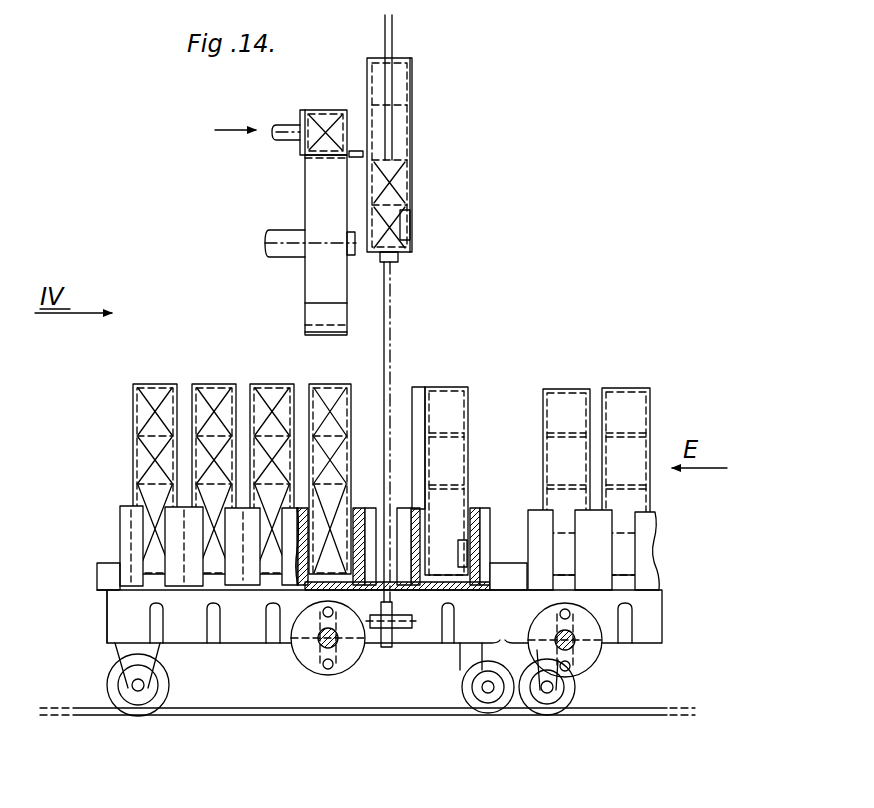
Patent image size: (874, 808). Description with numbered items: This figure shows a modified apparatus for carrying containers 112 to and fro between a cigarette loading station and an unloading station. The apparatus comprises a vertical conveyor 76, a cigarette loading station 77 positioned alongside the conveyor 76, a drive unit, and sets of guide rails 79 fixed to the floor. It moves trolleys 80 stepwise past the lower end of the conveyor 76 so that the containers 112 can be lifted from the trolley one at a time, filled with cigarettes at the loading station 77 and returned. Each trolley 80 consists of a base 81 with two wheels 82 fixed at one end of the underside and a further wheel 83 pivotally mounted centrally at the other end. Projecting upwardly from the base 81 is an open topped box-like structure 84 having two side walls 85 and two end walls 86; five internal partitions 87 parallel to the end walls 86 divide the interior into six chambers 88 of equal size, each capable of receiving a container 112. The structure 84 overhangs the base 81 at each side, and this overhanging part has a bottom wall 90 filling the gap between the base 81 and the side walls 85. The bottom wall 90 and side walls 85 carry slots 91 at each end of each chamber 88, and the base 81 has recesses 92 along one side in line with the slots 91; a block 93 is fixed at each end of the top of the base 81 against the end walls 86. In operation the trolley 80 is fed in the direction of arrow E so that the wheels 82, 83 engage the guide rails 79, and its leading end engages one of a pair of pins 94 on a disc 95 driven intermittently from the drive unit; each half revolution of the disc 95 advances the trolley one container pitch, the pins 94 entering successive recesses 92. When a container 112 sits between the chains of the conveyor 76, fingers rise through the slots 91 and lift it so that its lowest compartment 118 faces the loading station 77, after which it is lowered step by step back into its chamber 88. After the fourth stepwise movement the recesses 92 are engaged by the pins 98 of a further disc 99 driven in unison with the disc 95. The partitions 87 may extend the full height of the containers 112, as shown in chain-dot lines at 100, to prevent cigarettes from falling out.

The vertical conveyor 76 is at (393, 312).
The cigarette loading station 77 is at (300, 197).
The guide rails 79 is at (240, 716).
The trolley 80 is at (130, 618).
The base 81 is at (110, 640).
The wheels 82 is at (110, 688).
The wheel 83 is at (464, 703).
The box-like structure 84 is at (496, 500).
The side walls 85 is at (372, 500).
The end walls 86 is at (503, 530).
The internal partitions 87 is at (425, 525).
The chambers 88 is at (400, 522).
The bottom wall 90 is at (447, 591).
The slots 91 is at (213, 520).
The recesses 92 is at (270, 645).
The block 93 is at (98, 584).
The pins 94 is at (576, 658).
The disc 95 is at (598, 652).
The pins 98 is at (338, 668).
The further disc 99 is at (310, 657).
The full-height partitions 100 is at (420, 386).
The containers 112 is at (414, 132).
The lowest compartment 118 is at (372, 135).